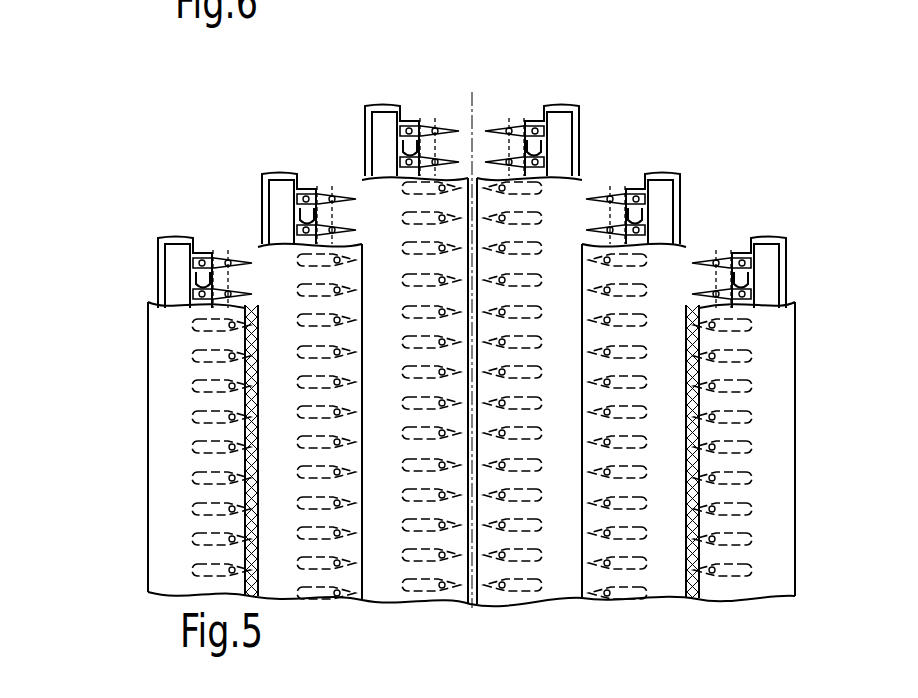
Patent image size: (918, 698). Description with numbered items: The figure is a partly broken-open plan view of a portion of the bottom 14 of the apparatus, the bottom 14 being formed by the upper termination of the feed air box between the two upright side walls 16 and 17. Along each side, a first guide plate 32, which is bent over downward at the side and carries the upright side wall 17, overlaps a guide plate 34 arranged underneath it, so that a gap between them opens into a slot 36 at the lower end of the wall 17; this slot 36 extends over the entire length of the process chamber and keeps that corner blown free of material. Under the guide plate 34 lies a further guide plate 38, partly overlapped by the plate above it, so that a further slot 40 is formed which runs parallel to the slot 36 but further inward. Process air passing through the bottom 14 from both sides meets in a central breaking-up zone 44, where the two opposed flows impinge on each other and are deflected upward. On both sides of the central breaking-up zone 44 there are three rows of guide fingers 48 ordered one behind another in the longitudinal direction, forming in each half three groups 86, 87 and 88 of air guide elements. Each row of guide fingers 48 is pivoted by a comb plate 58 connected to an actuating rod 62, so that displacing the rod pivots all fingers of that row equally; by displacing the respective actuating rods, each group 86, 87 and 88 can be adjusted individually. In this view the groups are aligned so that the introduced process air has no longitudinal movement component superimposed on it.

The bottom 14 is at (125, 240).
The upright side wall 16 is at (245, 400).
The upright side wall 17 is at (737, 372).
The first guide plate 32 is at (773, 505).
The guide plate 34 is at (653, 577).
The slot 36 is at (685, 592).
The guide plate 38 is at (550, 567).
The slot 40 is at (571, 575).
The central breaking-up zone 44 is at (473, 603).
The guide fingers 48 is at (722, 247).
The comb plate 58 is at (765, 282).
The actuating rod 62 is at (770, 238).
The group of air guide elements 86 is at (772, 166).
The group of air guide elements 87 is at (637, 160).
The group of air guide elements 88 is at (528, 97).